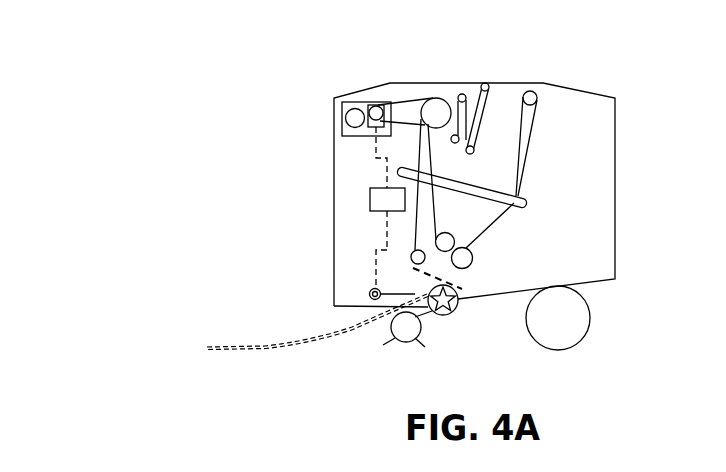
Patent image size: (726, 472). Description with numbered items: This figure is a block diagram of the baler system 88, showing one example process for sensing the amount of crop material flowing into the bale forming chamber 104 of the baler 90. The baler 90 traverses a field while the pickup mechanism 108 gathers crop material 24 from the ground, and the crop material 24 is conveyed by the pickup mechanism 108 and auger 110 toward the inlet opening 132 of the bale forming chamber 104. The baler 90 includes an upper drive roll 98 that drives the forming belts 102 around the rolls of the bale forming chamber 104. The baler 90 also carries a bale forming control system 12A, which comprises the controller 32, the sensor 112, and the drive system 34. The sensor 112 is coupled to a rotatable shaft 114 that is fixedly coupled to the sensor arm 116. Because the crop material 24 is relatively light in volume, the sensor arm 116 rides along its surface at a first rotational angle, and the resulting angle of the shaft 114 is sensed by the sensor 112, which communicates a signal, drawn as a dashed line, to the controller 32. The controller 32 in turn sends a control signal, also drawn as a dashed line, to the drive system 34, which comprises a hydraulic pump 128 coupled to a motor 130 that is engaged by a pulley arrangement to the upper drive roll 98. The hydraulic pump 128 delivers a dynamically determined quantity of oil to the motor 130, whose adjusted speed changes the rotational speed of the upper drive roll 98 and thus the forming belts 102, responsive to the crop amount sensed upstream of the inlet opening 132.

The bale forming control system 12A is at (295, 179).
The crop material 24 is at (267, 347).
The controller 32 is at (370, 196).
The drive system 34 is at (343, 118).
The baler system 88 is at (185, 78).
The baler 90 is at (617, 167).
The upper drive roll 98 is at (436, 97).
The forming belts 102 is at (427, 157).
The bale forming chamber 104 is at (569, 215).
The pickup mechanism 108 is at (444, 349).
The auger 110 is at (454, 311).
The sensor 112 is at (369, 296).
The rotatable shaft 114 is at (369, 292).
The sensor arm 116 is at (372, 289).
The hydraulic pump 128 is at (353, 106).
The motor 130 is at (375, 107).
The inlet opening 132 is at (458, 290).